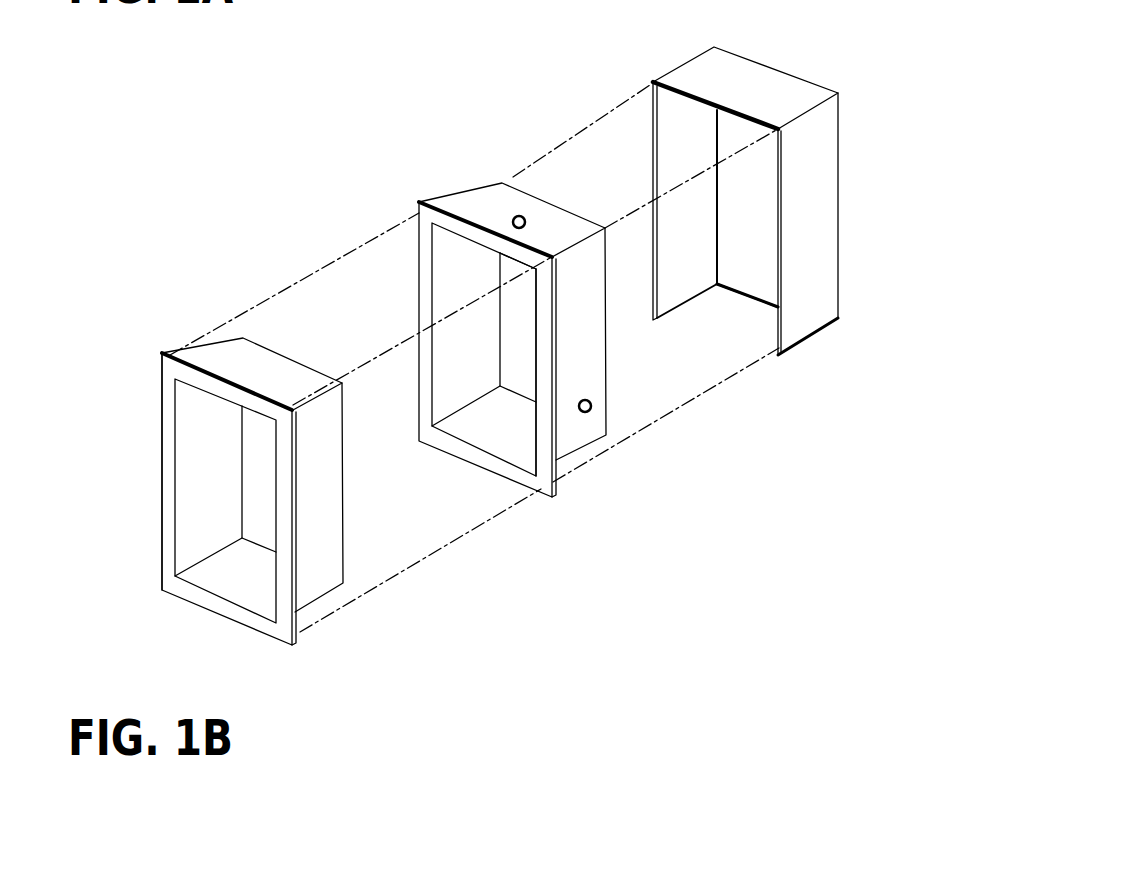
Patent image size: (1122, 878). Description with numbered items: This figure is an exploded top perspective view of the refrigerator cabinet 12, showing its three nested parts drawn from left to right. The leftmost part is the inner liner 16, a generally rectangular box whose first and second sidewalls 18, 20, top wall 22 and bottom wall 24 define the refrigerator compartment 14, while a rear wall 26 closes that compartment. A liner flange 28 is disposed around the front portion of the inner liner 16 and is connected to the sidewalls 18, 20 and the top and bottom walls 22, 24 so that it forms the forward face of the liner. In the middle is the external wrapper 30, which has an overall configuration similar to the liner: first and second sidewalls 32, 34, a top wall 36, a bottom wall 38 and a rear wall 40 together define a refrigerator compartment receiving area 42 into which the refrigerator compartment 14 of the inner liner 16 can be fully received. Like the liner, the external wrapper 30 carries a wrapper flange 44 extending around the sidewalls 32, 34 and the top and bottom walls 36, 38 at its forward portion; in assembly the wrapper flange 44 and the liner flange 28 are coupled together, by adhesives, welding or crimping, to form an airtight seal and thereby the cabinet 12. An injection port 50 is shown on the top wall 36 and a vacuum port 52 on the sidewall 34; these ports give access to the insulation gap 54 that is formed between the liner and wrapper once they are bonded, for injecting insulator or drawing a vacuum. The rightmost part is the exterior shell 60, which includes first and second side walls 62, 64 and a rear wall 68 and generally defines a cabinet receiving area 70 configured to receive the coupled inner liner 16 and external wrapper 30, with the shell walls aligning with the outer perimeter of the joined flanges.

The cabinet 12 is at (596, 530).
The refrigerator compartment 14 is at (196, 537).
The inner liner 16 is at (248, 454).
The first sidewall 18 is at (197, 413).
The second sidewall 20 is at (330, 548).
The top wall 22 is at (281, 377).
The bottom wall 24 is at (235, 588).
The rear wall 26 is at (253, 477).
The liner flange 28 is at (168, 462).
The external wrapper 30 is at (536, 346).
The first sidewall 32 is at (447, 250).
The second sidewall 34 is at (523, 328).
The top wall 36 is at (553, 227).
The bottom wall 38 is at (493, 437).
The rear wall 40 is at (513, 268).
The refrigerator compartment receiving area 42 is at (459, 374).
The wrapper flange 44 is at (543, 430).
The injection port 50 is at (519, 216).
The vacuum port 52 is at (585, 412).
The insulation gap 54 is at (578, 307).
The exterior shell 60 is at (748, 210).
The first side wall 62 is at (673, 125).
The second side wall 64 is at (818, 134).
The rear wall 68 is at (752, 227).
The cabinet receiving area 70 is at (740, 272).